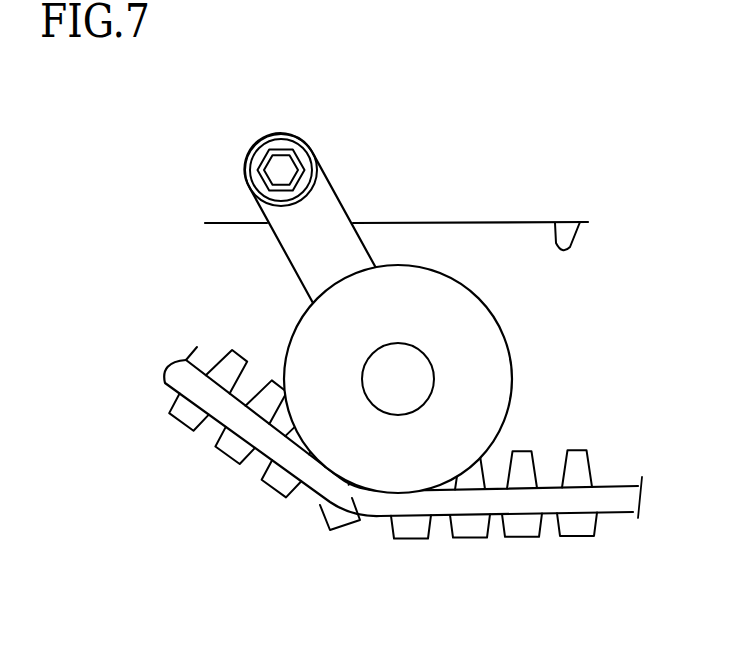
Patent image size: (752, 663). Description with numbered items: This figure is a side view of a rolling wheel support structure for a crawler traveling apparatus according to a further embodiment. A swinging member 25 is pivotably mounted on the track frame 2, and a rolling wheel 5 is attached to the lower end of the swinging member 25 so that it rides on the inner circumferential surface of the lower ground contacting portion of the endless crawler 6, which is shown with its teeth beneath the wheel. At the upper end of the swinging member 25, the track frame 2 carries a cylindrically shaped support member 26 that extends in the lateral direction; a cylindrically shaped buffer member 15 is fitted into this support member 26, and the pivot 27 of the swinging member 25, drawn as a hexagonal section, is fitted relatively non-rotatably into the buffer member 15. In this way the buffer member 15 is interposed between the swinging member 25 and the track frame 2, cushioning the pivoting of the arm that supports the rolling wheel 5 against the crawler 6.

The track frame 2 is at (580, 222).
The rolling wheel 5 is at (495, 367).
The endless crawler 6 is at (617, 505).
The buffer member 15 is at (252, 158).
The swinging member 25 is at (345, 205).
The support member 26 is at (295, 137).
The pivot 27 is at (283, 170).